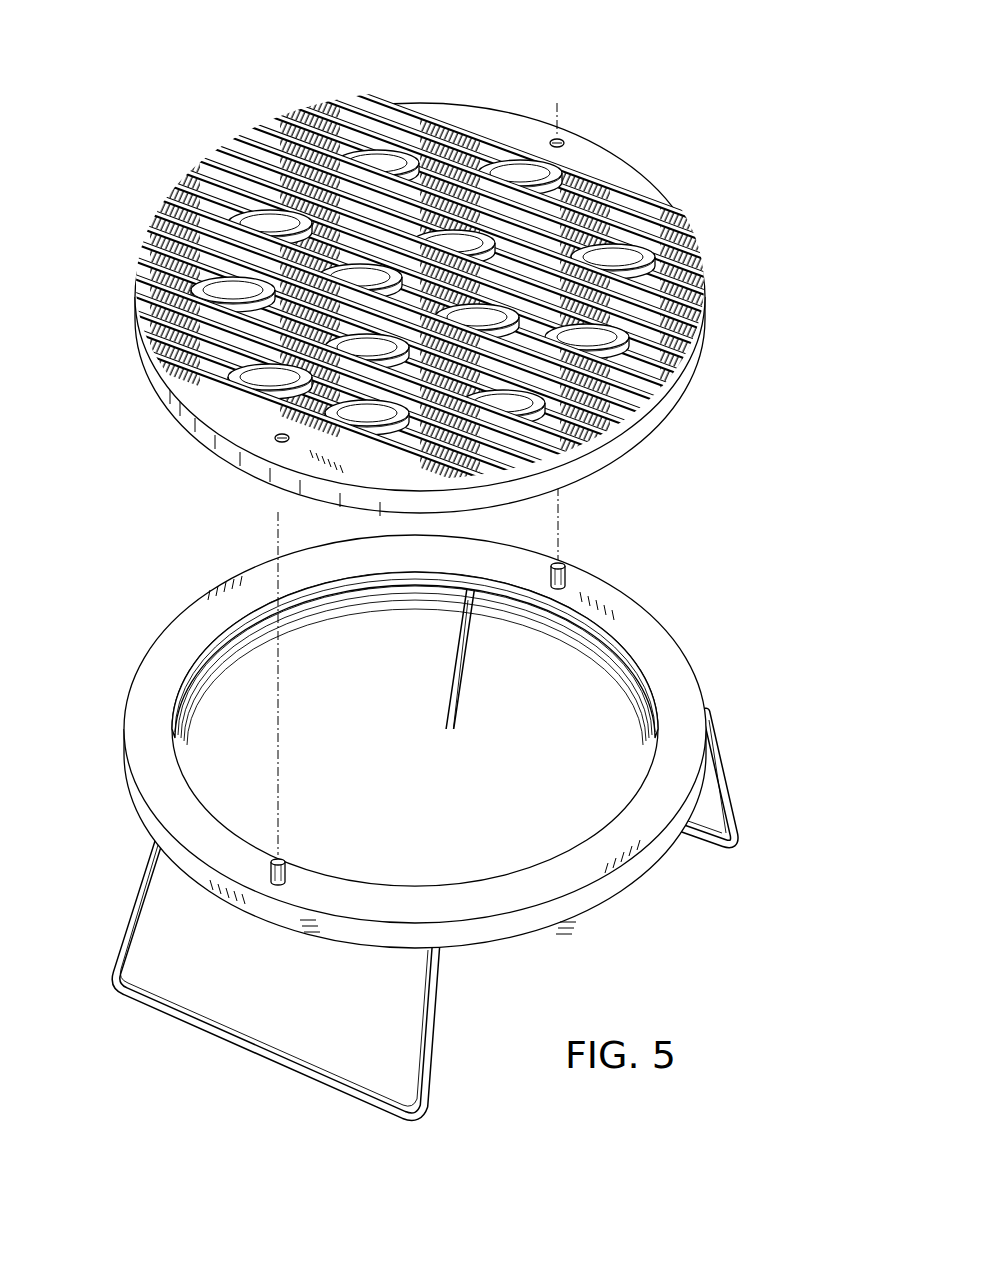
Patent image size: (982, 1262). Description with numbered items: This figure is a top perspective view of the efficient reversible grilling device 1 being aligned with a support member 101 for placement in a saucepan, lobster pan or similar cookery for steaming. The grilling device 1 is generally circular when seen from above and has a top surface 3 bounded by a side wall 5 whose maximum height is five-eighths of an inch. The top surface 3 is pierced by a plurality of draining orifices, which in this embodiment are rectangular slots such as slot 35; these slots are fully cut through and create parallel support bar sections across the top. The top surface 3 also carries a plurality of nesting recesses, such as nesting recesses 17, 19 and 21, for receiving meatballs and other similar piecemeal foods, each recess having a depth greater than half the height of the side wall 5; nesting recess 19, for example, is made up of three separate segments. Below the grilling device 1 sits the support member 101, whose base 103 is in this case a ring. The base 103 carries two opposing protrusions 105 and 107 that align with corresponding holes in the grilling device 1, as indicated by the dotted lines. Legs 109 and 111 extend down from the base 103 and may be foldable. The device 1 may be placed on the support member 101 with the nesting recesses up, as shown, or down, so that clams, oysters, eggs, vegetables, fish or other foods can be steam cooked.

The efficient reversible grilling device 1 is at (639, 161).
The top surface 3 is at (580, 148).
The side wall 5 is at (658, 420).
The nesting recess 17 is at (376, 175).
The nesting recess 19 is at (518, 193).
The nesting recess 21 is at (275, 223).
The slot 35 is at (438, 137).
The support member 101 is at (681, 625).
The base 103 is at (678, 698).
The protrusion 105 is at (570, 570).
The protrusion 107 is at (288, 858).
The leg 109 is at (736, 815).
The leg 111 is at (152, 882).